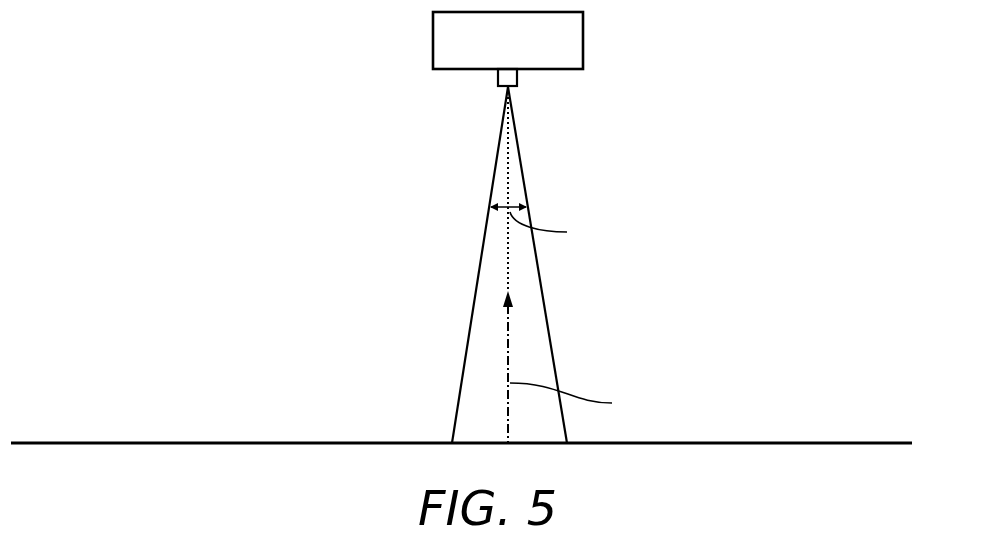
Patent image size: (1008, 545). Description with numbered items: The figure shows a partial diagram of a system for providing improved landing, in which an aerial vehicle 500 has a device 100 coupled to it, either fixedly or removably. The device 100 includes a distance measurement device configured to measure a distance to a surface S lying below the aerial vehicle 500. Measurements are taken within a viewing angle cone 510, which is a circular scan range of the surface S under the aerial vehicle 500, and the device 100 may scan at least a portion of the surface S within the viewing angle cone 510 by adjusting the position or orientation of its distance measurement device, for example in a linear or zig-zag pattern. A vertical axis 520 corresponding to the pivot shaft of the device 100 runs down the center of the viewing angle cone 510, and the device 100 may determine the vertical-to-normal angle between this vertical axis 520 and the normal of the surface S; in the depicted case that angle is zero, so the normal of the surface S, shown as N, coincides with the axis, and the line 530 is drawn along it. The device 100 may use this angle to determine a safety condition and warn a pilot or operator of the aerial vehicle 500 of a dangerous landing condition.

The aerial vehicle 500 is at (583, 40).
The device 100 is at (518, 78).
The viewing angle cone 510 is at (523, 170).
The vertical axis 520 is at (508, 221).
The sensing axis 530 is at (508, 355).
The surface normal N is at (508, 312).
The surface S is at (800, 443).